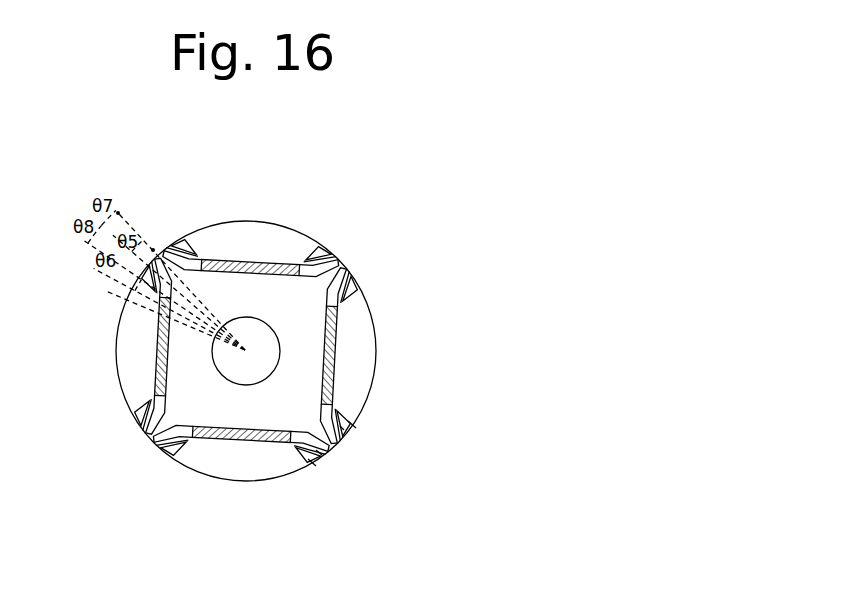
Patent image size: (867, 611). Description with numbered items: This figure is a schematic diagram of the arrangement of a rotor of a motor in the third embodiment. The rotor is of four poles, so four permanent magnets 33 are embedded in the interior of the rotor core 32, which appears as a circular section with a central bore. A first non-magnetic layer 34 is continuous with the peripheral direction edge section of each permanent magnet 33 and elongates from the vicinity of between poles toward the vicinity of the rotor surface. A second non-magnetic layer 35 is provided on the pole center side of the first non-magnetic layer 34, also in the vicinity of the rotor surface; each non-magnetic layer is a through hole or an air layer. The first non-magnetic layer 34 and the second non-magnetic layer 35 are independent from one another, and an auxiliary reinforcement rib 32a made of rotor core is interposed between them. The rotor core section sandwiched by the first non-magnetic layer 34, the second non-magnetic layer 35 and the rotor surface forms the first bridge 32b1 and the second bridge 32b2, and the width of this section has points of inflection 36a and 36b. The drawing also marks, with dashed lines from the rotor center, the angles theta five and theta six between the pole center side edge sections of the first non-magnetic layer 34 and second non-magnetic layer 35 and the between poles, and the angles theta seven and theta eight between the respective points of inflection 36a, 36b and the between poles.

The rotor core 32 is at (295, 328).
The permanent magnet 33 is at (236, 266).
The first non-magnetic layer 34 is at (335, 262).
The second non-magnetic layer 35 is at (320, 243).
The auxiliary reinforcement rib 32a is at (383, 235).
The first bridge 32b1 is at (341, 428).
The second bridge 32b2 is at (353, 423).
The point of inflection 36a is at (319, 453).
The point of inflection 36b is at (312, 459).